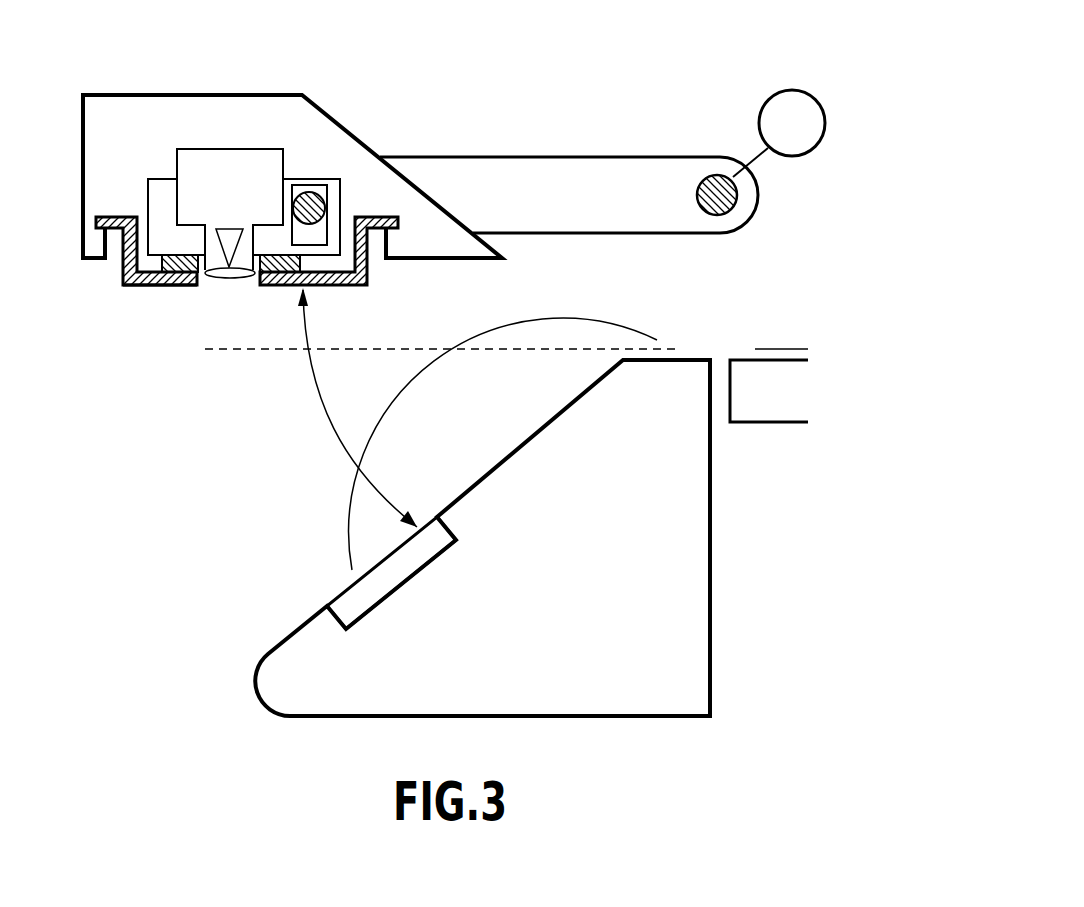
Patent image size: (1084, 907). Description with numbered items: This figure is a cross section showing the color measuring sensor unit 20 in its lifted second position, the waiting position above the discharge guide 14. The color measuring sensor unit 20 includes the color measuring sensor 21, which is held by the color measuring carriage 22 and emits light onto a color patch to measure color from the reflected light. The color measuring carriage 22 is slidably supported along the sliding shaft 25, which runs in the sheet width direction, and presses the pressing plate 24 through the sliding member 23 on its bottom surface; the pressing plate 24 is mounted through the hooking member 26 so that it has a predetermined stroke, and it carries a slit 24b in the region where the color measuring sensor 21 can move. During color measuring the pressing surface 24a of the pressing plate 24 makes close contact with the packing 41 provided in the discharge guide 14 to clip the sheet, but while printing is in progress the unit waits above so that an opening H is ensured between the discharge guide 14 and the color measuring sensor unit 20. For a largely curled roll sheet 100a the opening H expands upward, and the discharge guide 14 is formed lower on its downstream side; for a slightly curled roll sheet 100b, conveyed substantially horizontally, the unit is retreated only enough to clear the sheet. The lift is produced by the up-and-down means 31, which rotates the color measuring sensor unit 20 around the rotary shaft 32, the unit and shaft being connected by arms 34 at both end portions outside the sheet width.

The discharge guide 14 is at (515, 445).
The color measuring sensor unit 20 is at (178, 94).
The color measuring sensor 21 is at (233, 178).
The color measuring carriage 22 is at (163, 188).
The sliding member 23 is at (180, 283).
The pressing plate 24 is at (140, 285).
The pressing surface 24a is at (168, 287).
The slit 24b is at (206, 286).
The sliding shaft 25 is at (311, 197).
The hooking member 26 is at (116, 216).
The up-and-down means 31 is at (793, 90).
The rotary shaft 32 is at (708, 178).
The arms 34 is at (556, 193).
The packing 41 is at (400, 572).
The largely curled roll sheet 100a is at (343, 523).
The slightly curled roll sheet 100b is at (370, 348).
The opening H is at (326, 408).